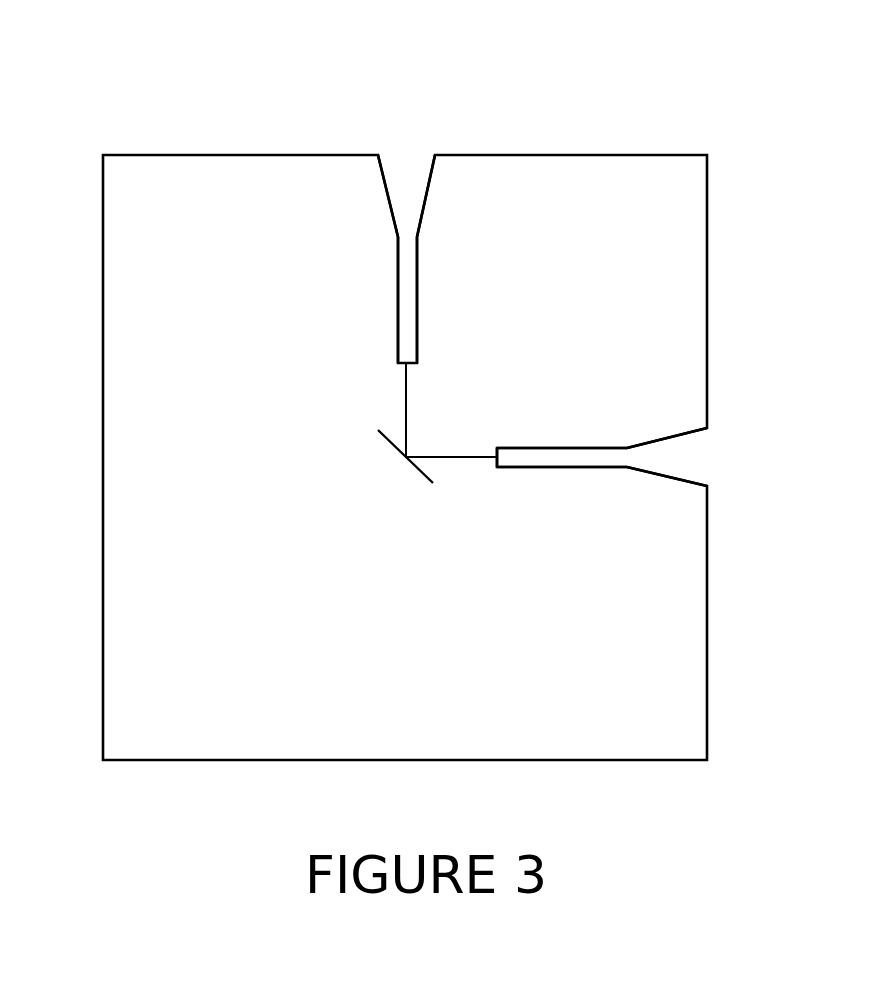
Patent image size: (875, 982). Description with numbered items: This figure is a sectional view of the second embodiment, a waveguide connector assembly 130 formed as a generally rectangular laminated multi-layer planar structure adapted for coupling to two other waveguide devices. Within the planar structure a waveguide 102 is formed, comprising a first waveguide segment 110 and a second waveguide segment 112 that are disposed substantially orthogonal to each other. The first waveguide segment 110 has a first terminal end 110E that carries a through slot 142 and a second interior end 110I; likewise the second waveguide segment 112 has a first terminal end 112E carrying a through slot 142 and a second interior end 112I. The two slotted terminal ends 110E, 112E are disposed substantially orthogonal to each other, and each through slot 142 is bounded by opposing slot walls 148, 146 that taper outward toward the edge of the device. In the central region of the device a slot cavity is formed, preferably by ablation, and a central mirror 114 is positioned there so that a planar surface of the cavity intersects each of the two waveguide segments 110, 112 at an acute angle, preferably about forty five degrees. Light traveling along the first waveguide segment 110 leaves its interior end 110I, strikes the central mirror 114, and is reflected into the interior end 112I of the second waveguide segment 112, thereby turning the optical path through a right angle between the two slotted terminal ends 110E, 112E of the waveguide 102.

The waveguide connector assembly 130 is at (644, 104).
The through slot 142 is at (410, 138).
The slot wall 148 is at (398, 270).
The slot wall 146 is at (417, 270).
The second waveguide segment 112 is at (405, 395).
The first waveguide segment 110 is at (463, 458).
The waveguide 102 is at (245, 380).
The first terminal end of second segment 112E is at (410, 372).
The second interior end of second segment 112I is at (390, 430).
The second interior end of first segment 110I is at (426, 444).
The first terminal end of first segment 110E is at (497, 460).
The central mirror 114 is at (417, 470).